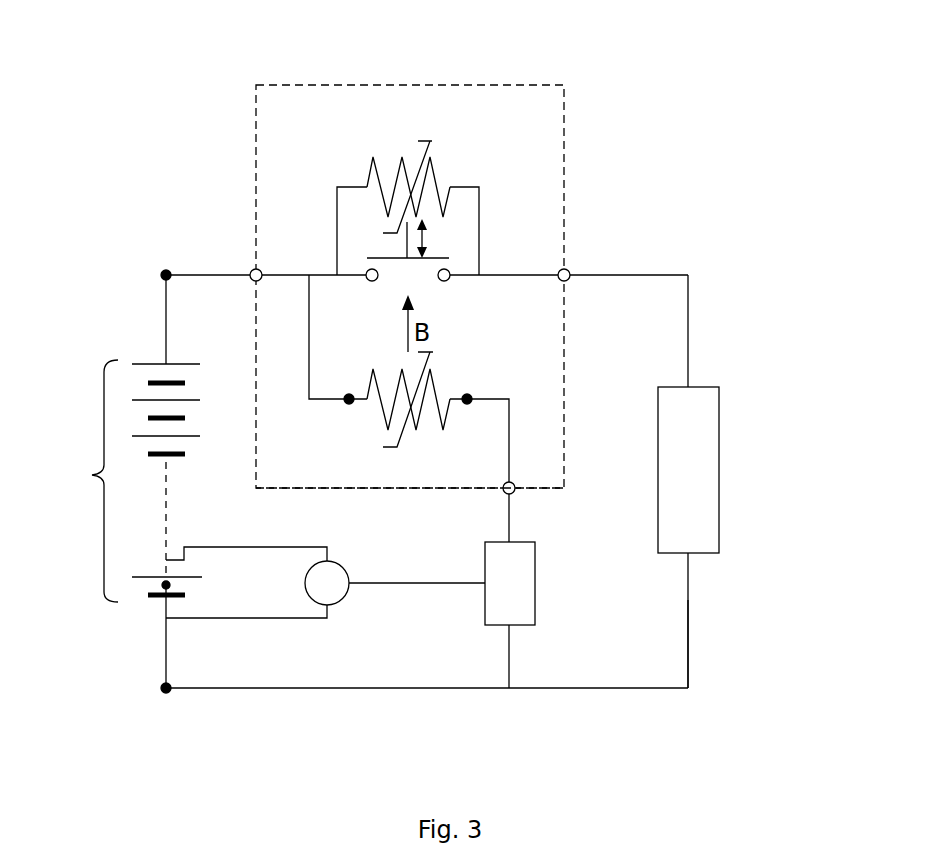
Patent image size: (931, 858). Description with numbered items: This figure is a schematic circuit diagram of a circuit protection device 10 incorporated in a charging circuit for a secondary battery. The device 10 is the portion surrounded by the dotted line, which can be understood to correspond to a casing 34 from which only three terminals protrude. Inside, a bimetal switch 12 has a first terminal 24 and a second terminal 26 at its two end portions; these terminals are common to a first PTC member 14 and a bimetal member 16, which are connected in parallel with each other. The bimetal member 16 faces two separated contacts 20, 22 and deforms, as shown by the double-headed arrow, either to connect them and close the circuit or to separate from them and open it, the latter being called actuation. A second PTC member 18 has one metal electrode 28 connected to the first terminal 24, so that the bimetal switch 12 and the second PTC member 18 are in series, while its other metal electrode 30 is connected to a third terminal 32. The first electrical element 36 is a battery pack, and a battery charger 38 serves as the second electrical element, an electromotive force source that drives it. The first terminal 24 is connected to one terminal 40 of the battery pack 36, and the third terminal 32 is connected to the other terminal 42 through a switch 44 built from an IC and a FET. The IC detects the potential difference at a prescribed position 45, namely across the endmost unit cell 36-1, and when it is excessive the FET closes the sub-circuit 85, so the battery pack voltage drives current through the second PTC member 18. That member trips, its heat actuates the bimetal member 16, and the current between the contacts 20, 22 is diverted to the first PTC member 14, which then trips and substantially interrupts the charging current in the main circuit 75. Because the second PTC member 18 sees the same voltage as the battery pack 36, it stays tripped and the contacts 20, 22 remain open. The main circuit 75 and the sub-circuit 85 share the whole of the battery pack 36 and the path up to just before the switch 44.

The circuit protection device 10 is at (448, 82).
The bimetal switch 12 is at (447, 139).
The first PTC member 14 is at (432, 141).
The bimetal member 16 is at (449, 258).
The second PTC member 18 is at (433, 352).
The contact 20 is at (372, 283).
The contact 22 is at (444, 283).
The first terminal 24 is at (256, 282).
The second terminal 26 is at (564, 282).
The metal electrode 28 is at (349, 405).
The metal electrode 30 is at (467, 393).
The third terminal 32 is at (509, 481).
The casing 34 is at (418, 490).
The first electrical element 36 is at (157, 465).
The unit cell 36-1 is at (147, 585).
The battery charger 38 is at (719, 468).
The terminal 40 is at (166, 270).
The terminal 42 is at (166, 695).
The switch 44 is at (350, 606).
The prescribed position 45 is at (170, 585).
The main circuit 75 is at (688, 655).
The sub-circuit 85 is at (509, 657).